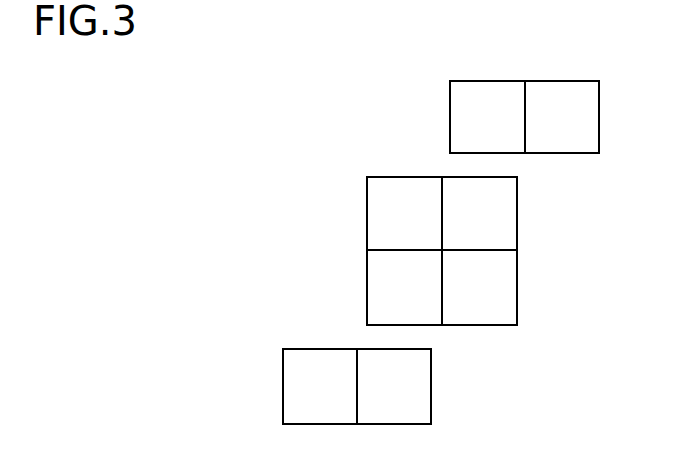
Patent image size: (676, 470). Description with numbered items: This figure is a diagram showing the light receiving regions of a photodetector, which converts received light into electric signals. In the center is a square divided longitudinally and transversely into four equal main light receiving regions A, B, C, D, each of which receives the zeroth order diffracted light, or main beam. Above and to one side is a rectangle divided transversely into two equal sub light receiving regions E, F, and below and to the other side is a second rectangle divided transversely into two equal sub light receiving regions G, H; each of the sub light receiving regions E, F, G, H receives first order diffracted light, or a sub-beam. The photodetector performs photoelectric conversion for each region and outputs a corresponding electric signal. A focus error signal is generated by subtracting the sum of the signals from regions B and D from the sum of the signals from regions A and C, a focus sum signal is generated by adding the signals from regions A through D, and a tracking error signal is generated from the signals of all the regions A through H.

The main light receiving region A is at (404, 213).
The main light receiving region B is at (479, 213).
The main light receiving region C is at (479, 287).
The main light receiving region D is at (404, 287).
The sub light receiving region E is at (487, 117).
The sub light receiving region F is at (562, 117).
The sub light receiving region G is at (320, 386).
The sub light receiving region H is at (394, 386).